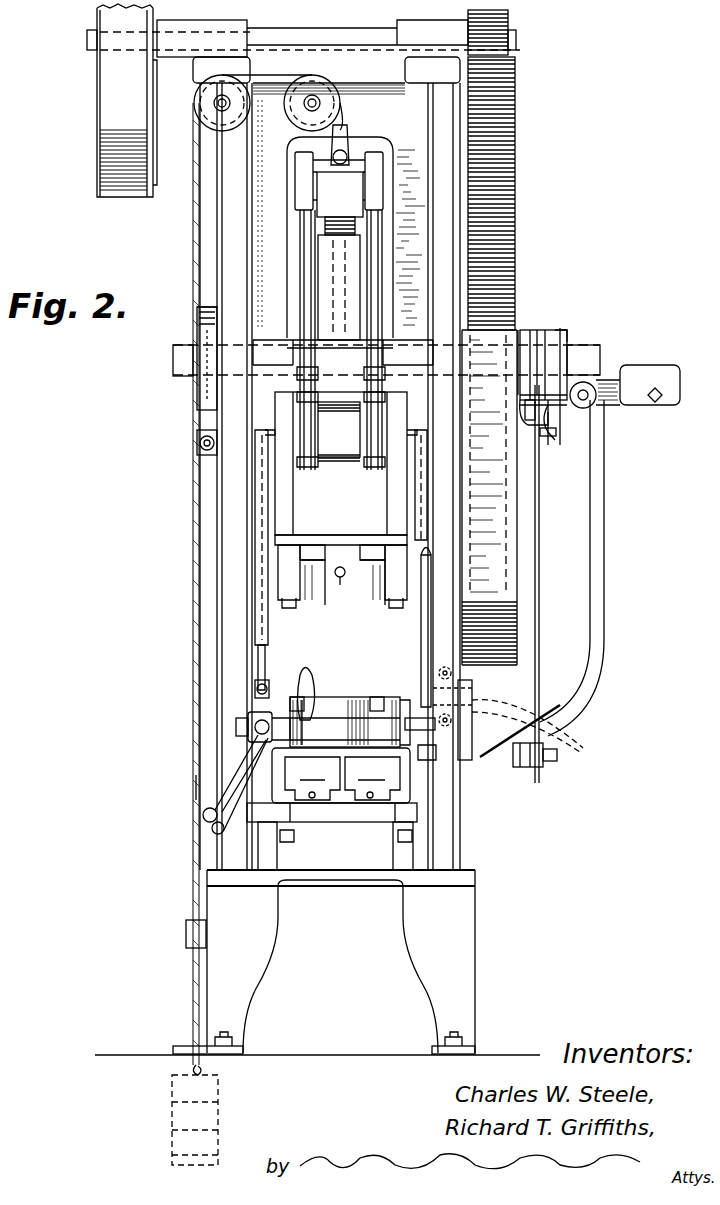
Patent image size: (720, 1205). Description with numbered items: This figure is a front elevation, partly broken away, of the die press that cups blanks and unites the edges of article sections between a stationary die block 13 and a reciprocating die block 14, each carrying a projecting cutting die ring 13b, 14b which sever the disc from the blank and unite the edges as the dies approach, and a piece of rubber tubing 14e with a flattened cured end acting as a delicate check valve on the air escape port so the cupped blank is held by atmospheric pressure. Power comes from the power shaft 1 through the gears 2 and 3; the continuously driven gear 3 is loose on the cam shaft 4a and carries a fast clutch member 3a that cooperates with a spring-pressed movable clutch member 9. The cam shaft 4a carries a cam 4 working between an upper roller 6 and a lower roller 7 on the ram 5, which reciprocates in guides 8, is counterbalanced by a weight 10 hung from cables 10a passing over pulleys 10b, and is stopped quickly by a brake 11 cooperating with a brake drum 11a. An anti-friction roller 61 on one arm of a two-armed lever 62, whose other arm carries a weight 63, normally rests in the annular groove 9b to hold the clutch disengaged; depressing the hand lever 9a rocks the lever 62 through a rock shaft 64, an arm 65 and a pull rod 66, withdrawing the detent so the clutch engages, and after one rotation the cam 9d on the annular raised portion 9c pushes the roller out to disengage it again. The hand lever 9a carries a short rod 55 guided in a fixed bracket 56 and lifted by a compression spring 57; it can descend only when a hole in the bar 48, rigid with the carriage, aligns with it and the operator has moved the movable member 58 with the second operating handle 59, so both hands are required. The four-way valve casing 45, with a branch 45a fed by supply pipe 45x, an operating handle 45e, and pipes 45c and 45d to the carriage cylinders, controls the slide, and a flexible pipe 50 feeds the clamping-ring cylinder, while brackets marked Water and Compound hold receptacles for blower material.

The power shaft 1 is at (363, 38).
The gear 2 is at (505, 28).
The gear 3 is at (505, 158).
The clutch member 3a is at (518, 330).
The cam 4 is at (352, 278).
The cam shaft 4a is at (598, 362).
The ram 5 is at (341, 463).
The upper roller 6 is at (345, 205).
The lower roller 7 is at (345, 462).
The guides 8 is at (258, 490).
The movable clutch member 9 is at (530, 338).
The hand lever 9a is at (418, 622).
The annular groove 9b is at (548, 340).
The annular raised portion 9c is at (553, 345).
The cam 9d is at (552, 425).
The weight 10 is at (176, 1090).
The cables 10a is at (194, 789).
The pulleys 10b is at (290, 110).
The brake 11 is at (205, 398).
The brake drum 11a is at (197, 435).
The stationary die block 13 is at (345, 722).
The die ring 13b is at (370, 697).
The reciprocating die block 14 is at (315, 608).
The die ring 14b is at (345, 608).
The rubber tubing 14e is at (337, 568).
The four-way valve casing 45 is at (238, 727).
The branch 45a is at (256, 697).
The pipe 45c is at (238, 770).
The pipe 45d is at (210, 823).
The operating handle 45e is at (310, 690).
The supply pipe 45x is at (262, 662).
The bar 48 is at (430, 760).
The flexible pipe 50 is at (296, 610).
The short rod 55 is at (435, 735).
The fixed bracket 56 is at (480, 760).
The compression spring 57 is at (430, 740).
The movable member 58 is at (395, 805).
The second operating handle 59 is at (336, 748).
The anti-friction roller 61 is at (535, 398).
The two-armed lever 62 is at (560, 415).
The weight 63 is at (652, 368).
The rock shaft 64 is at (534, 729).
The arm 65 is at (545, 755).
The pull rod 66 is at (540, 595).